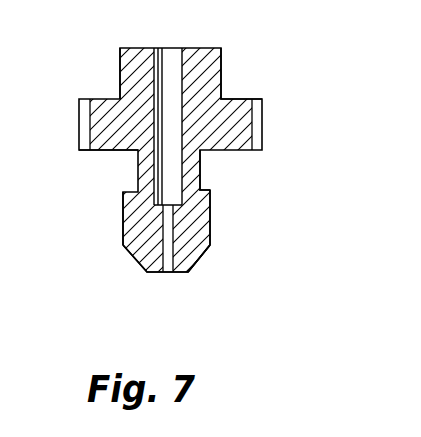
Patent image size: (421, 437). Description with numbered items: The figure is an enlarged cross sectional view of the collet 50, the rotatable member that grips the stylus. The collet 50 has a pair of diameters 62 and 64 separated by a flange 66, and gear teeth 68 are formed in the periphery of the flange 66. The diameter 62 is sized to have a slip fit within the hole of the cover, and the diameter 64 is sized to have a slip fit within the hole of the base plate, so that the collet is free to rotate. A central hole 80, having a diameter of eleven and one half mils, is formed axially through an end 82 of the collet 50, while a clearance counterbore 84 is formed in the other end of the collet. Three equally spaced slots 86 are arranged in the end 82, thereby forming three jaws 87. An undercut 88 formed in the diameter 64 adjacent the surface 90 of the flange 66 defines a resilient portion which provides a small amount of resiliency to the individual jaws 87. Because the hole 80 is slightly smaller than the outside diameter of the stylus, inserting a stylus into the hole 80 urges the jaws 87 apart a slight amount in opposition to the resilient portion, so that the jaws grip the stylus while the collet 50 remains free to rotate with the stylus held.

The collet 50 is at (275, 78).
The diameter 62 is at (120, 78).
The diameter 64 is at (122, 240).
The flange 66 is at (240, 99).
The gear teeth 68 is at (262, 122).
The central hole 80 is at (197, 263).
The end 82 is at (113, 210).
The clearance counterbore 84 is at (172, 52).
The slots 86 is at (210, 222).
The jaws 87 is at (172, 274).
The undercut 88 is at (200, 182).
The surface 90 is at (107, 152).